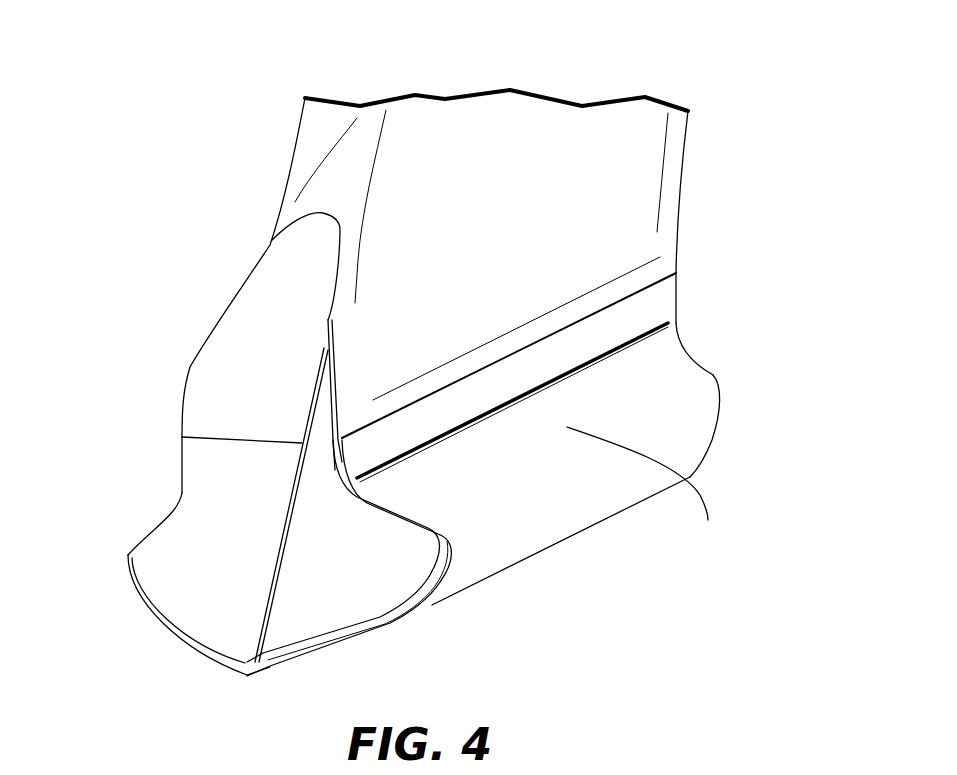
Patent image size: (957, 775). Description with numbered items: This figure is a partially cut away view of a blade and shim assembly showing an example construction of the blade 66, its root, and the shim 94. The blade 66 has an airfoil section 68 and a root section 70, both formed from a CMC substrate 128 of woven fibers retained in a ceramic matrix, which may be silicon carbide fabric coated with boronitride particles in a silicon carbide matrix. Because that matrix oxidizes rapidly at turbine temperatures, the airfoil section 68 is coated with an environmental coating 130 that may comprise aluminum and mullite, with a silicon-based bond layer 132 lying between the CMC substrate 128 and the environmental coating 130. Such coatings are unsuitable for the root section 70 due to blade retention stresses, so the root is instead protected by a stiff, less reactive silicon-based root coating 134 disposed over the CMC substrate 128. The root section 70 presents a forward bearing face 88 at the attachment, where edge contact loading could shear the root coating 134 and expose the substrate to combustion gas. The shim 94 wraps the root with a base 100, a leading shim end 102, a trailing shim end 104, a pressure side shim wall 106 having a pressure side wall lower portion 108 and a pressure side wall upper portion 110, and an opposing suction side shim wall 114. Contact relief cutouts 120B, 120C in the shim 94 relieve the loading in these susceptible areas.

The blade 66 is at (722, 112).
The airfoil section 68 is at (443, 96).
The root section 70 is at (119, 574).
The forward bearing face 88 is at (179, 537).
The shim 94 is at (691, 431).
The base 100 is at (247, 678).
The leading shim end 102 is at (146, 619).
The trailing shim end 104 is at (714, 375).
The pressure side shim wall 106 is at (538, 529).
The pressure side wall lower portion 108 is at (373, 637).
The pressure side wall upper portion 110 is at (650, 489).
The suction side shim wall 114 is at (128, 554).
The contact relief cutout 120B is at (693, 329).
The contact relief cutout 120C is at (124, 532).
The CMC substrate 128 is at (343, 551).
The environmental coating 130 is at (509, 347).
The bond layer 132 is at (321, 367).
The root coating 134 is at (343, 468).